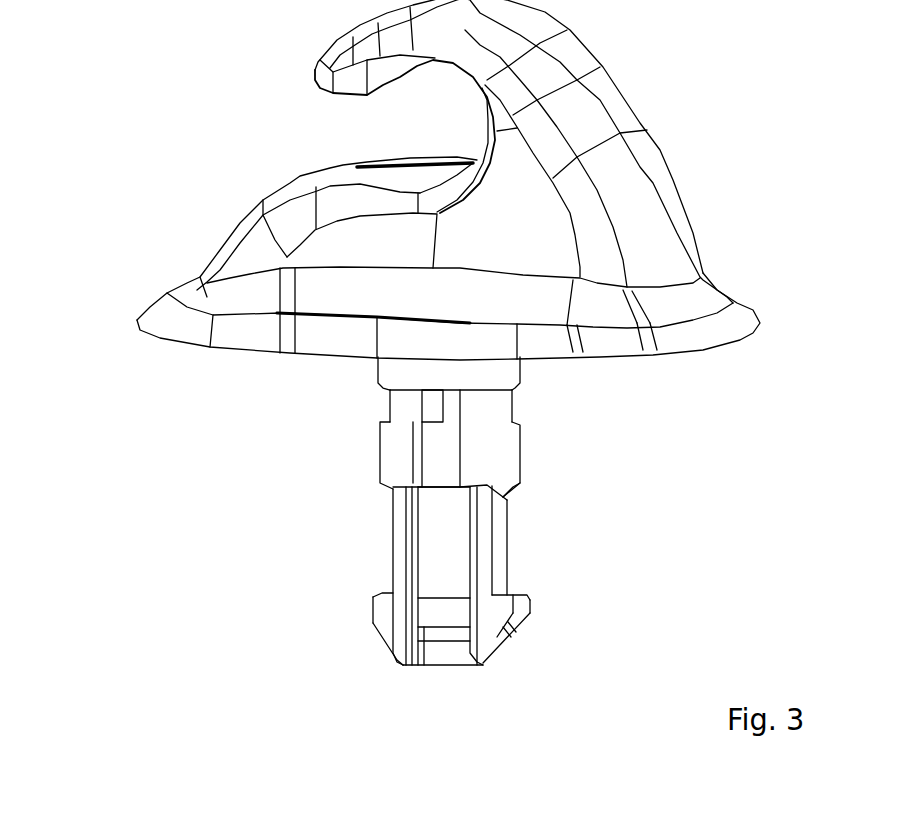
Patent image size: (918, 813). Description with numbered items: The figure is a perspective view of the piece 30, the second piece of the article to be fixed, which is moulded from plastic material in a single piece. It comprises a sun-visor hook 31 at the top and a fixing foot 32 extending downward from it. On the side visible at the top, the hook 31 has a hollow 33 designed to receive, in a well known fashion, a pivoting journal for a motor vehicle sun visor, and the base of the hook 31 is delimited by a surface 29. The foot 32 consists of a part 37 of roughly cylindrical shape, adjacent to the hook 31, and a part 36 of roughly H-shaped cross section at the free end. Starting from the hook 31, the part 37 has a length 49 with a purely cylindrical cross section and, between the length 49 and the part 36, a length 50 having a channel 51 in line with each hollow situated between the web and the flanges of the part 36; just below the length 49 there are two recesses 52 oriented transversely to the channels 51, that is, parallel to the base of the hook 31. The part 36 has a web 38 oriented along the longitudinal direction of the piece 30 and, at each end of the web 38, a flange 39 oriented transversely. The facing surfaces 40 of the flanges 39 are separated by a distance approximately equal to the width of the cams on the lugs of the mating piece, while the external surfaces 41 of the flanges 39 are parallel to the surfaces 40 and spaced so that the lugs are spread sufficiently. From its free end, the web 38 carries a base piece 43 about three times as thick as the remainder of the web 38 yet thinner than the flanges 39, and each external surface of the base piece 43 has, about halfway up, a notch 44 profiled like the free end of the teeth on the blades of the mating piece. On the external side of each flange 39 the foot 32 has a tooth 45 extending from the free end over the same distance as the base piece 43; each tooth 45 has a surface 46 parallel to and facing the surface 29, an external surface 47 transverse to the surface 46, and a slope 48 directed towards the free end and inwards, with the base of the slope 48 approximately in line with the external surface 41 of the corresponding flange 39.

The surface 29 is at (479, 334).
The piece 30 is at (434, 382).
The sun-visor hook 31 is at (434, 276).
The fixing foot 32 is at (368, 489).
The hollow 33 is at (447, 129).
The part 36 is at (463, 615).
The part 37 is at (432, 357).
The web 38 is at (541, 507).
The flange 39 is at (469, 575).
The facing surfaces 40 is at (372, 576).
The external surfaces 41 is at (566, 486).
The base piece 43 is at (443, 695).
The notch 44 is at (421, 668).
The tooth 45 is at (472, 656).
The surface 46 is at (526, 575).
The external surface 47 is at (516, 609).
The slope 48 is at (540, 673).
The length 49 is at (449, 302).
The length 50 is at (539, 438).
The channel 51 is at (377, 454).
The recess 52 is at (462, 398).